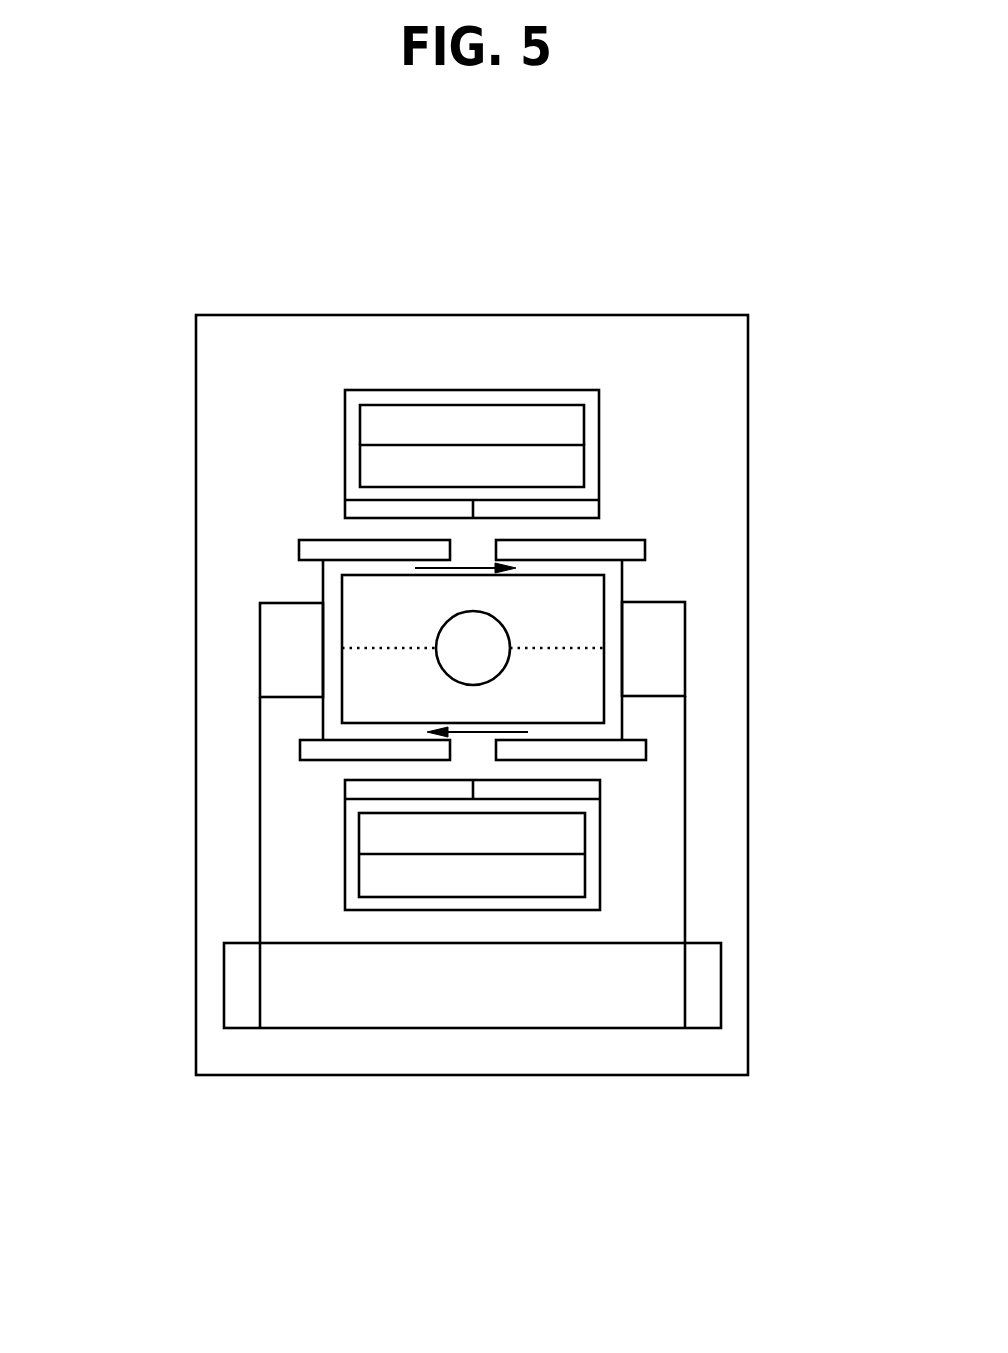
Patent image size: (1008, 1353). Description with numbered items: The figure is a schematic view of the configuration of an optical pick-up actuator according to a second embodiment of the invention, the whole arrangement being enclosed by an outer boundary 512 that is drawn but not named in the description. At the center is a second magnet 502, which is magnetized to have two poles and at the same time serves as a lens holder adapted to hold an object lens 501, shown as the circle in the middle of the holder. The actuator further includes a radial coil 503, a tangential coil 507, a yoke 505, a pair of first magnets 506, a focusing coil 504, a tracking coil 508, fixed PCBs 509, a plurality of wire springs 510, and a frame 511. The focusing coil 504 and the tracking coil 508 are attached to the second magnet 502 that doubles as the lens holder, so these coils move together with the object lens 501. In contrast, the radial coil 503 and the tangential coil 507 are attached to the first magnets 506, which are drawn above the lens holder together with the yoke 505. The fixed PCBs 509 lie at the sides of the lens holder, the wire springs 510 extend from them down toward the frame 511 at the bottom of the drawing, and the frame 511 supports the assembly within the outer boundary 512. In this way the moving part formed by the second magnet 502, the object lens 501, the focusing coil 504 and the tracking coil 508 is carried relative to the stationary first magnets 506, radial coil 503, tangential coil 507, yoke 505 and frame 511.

The object lens 501 is at (448, 665).
The second magnet 502 is at (368, 588).
The radial coil 503 is at (590, 509).
The focusing coil 504 is at (623, 593).
The yoke 505 is at (525, 412).
The first magnets 506 is at (577, 466).
The tangential coil 507 is at (347, 470).
The tracking coil 508 is at (318, 540).
The fixed PCBs 509 is at (622, 662).
The wire springs 510 is at (685, 795).
The frame 511 is at (617, 1015).
The outer housing 512 is at (212, 833).